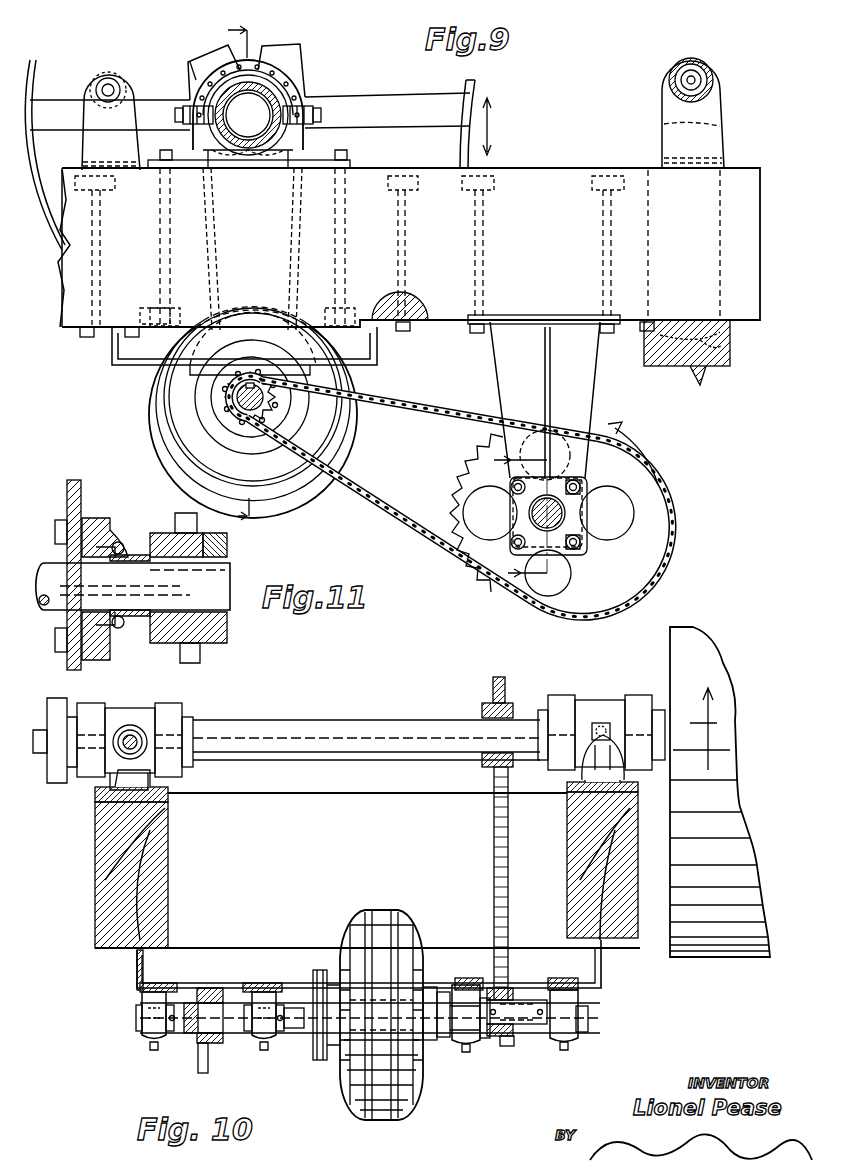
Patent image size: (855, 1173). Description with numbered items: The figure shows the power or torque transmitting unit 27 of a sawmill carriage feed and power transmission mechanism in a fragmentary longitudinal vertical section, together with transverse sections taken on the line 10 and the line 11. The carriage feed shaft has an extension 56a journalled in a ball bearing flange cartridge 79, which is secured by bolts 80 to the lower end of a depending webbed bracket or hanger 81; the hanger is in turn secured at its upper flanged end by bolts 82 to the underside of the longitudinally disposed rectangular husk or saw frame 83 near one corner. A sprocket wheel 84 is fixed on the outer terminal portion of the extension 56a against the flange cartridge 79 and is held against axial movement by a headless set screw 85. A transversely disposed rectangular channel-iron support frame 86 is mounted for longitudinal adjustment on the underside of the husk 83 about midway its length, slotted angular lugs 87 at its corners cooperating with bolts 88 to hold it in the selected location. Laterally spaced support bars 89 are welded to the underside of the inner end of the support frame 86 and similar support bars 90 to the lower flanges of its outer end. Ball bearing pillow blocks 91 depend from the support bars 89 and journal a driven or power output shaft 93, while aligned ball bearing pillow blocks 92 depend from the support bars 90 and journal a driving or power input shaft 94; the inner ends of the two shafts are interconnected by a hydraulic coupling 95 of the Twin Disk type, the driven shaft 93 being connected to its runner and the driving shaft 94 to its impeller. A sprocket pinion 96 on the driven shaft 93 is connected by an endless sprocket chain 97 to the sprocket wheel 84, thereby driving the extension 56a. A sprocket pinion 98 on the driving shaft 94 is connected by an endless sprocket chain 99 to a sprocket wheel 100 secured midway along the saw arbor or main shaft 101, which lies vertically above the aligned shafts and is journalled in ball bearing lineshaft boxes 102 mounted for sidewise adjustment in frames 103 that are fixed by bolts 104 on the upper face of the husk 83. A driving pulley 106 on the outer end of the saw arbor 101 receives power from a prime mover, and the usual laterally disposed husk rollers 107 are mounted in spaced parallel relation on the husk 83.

In FIG. 9, the section line 10— 10 is at (229, 273).
In FIG. 9, the section line 11— 11 is at (512, 518).
In FIG. 9, the power transmitting unit 27 is at (150, 380).
In FIG. 10, the power transmitting unit 27 is at (430, 1095).
In FIG. 9, the extension 56a is at (565, 515).
In FIG. 11, the extension 56a is at (215, 572).
In FIG. 9, the ball bearing flange cartridge 79 is at (595, 522).
In FIG. 11, the ball bearing flange cartridge 79 is at (120, 530).
In FIG. 9, the bolts 80 is at (577, 482).
In FIG. 11, the bolts 80 is at (55, 532).
In FIG. 9, the depending webbed bracket or hanger 81 is at (588, 370).
In FIG. 11, the depending webbed bracket or hanger 81 is at (66, 500).
In FIG. 9, the bolts 82 is at (605, 241).
In FIG. 9, the husk or saw frame 83 is at (535, 172).
In FIG. 10, the husk or saw frame 83 is at (367, 870).
In FIG. 9, the sprocket wheel 84 is at (462, 475).
In FIG. 11, the sprocket wheel 84 is at (200, 652).
In FIG. 11, the headless set screw 85 is at (220, 530).
In FIG. 9, the support frame 86 is at (380, 368).
In FIG. 10, the support frame 86 is at (136, 967).
In FIG. 9, the slotted angular lugs 87 is at (110, 348).
In FIG. 9, the bolts 88 is at (88, 300).
In FIG. 9, the support bars 89 is at (138, 370).
In FIG. 10, the support bars 89 is at (140, 1000).
In FIG. 10, the support bars 90 is at (462, 975).
In FIG. 9, the ball bearing pillow blocks 91 is at (236, 400).
In FIG. 10, the ball bearing pillow blocks 91 is at (148, 1048).
In FIG. 9, the ball bearing pillow blocks 92 is at (200, 395).
In FIG. 10, the ball bearing pillow blocks 92 is at (465, 1052).
In FIG. 9, the driven or power output shaft 93 is at (246, 410).
In FIG. 10, the driven or power output shaft 93 is at (190, 1040).
In FIG. 10, the driving or power input shaft 94 is at (530, 1038).
In FIG. 9, the hydraulic coupling 95 is at (342, 428).
In FIG. 10, the hydraulic coupling 95 is at (384, 1120).
In FIG. 9, the sprocket pinion 96 is at (272, 412).
In FIG. 10, the sprocket pinion 96 is at (224, 1040).
In FIG. 9, the endless sprocket chain 97 is at (372, 508).
In FIG. 10, the endless sprocket chain 97 is at (200, 1072).
In FIG. 9, the sprocket pinion 98 is at (250, 320).
In FIG. 10, the sprocket pinion 98 is at (518, 1040).
In FIG. 9, the endless sprocket chain 99 is at (216, 238).
In FIG. 10, the endless sprocket chain 99 is at (492, 825).
In FIG. 9, the sprocket wheel 100 is at (200, 78).
In FIG. 10, the sprocket wheel 100 is at (482, 707).
In FIG. 9, the saw arbor or main shaft 101 is at (255, 100).
In FIG. 10, the saw arbor or main shaft 101 is at (298, 728).
In FIG. 9, the ball bearing lineshaft boxes 102 is at (296, 78).
In FIG. 10, the ball bearing lineshaft boxes 102 is at (120, 710).
In FIG. 9, the frames 103 is at (312, 145).
In FIG. 10, the frames 103 is at (95, 790).
In FIG. 9, the bolts 104 is at (158, 262).
In FIG. 9, the driving pulley 106 is at (478, 88).
In FIG. 10, the driving pulley 106 is at (700, 655).
In FIG. 9, the husk rollers 107 is at (85, 110).